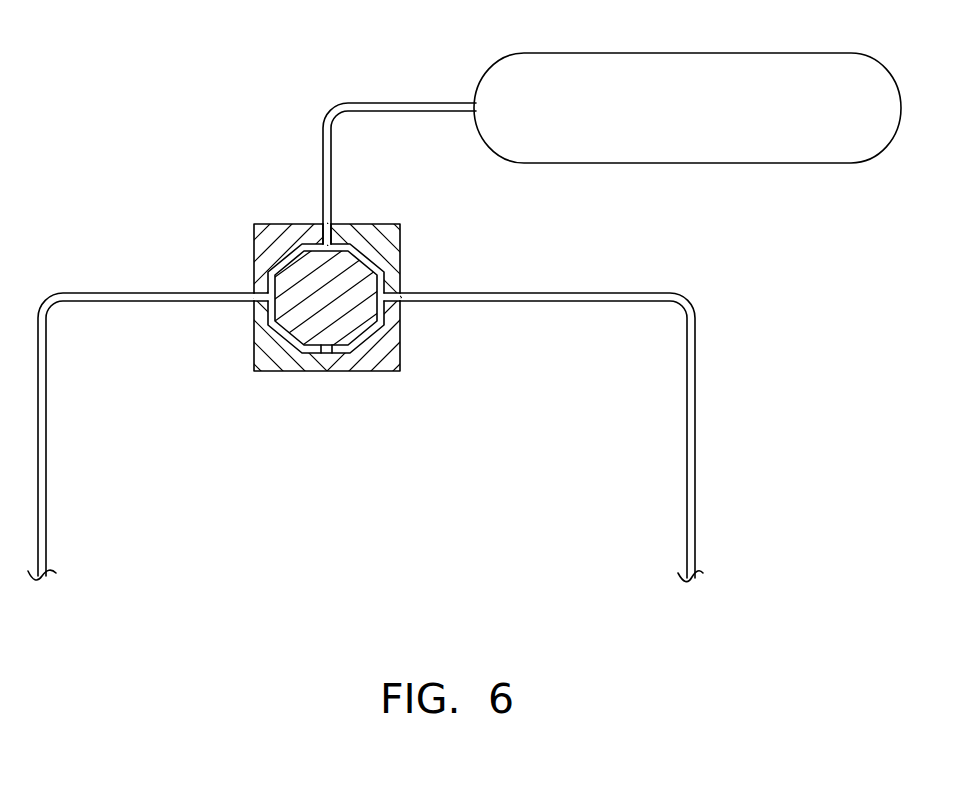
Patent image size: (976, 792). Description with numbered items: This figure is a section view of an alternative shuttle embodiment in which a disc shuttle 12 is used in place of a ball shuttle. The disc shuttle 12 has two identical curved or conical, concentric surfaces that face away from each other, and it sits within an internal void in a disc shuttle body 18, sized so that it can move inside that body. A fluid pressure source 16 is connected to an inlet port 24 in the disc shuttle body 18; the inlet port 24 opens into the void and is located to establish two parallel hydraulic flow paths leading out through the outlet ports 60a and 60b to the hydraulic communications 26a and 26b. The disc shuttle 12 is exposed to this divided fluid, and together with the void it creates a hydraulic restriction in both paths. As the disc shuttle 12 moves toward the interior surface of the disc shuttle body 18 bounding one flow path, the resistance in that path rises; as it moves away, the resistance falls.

The fluid pressure source 16 is at (493, 64).
The inlet port 24 is at (324, 225).
The disc shuttle body 18 is at (256, 340).
The disc shuttle 12 is at (326, 354).
The outlet port 60b is at (256, 295).
The outlet port 60a is at (400, 296).
The hydraulic communication 26b is at (45, 505).
The hydraulic communication 26a is at (687, 517).